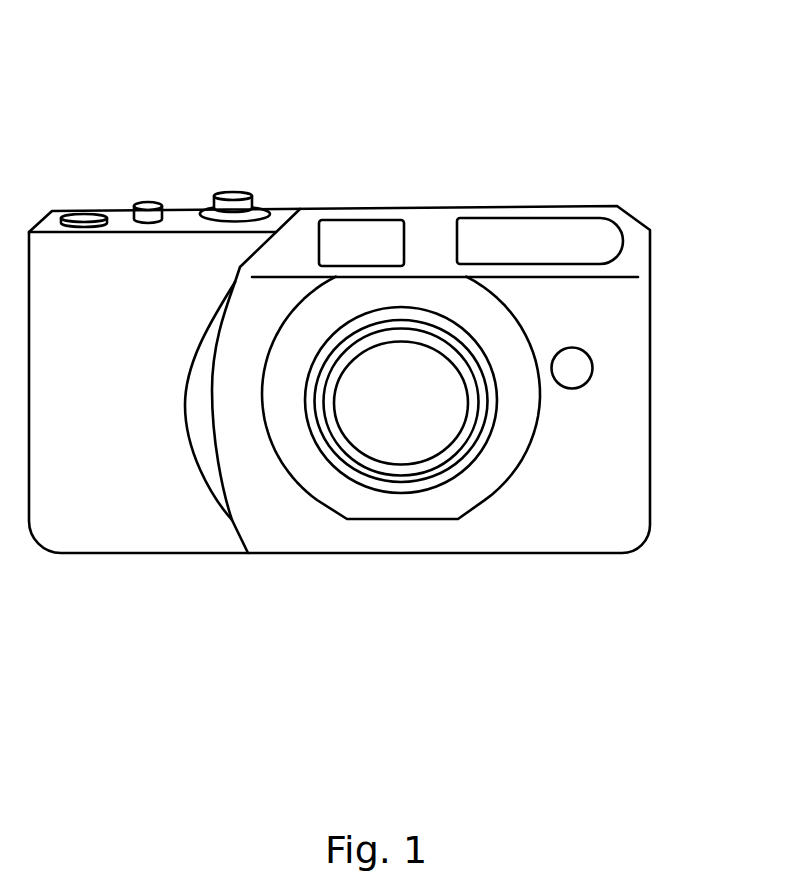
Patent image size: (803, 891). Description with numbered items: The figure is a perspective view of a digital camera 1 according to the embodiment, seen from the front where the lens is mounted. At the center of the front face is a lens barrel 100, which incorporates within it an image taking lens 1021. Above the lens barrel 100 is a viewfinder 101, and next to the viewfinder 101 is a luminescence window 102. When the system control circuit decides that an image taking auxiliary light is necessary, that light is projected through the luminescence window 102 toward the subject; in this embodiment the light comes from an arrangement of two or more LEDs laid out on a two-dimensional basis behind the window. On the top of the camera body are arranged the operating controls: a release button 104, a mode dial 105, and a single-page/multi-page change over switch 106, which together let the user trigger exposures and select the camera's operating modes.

The digital camera 1 is at (520, 96).
The lens barrel 100 is at (462, 430).
The image taking lens 1021 is at (382, 418).
The viewfinder 101 is at (362, 238).
The luminescence window 102 is at (582, 238).
The release button 104 is at (90, 213).
The mode dial 105 is at (228, 197).
The single-page/multi-page change over switch 106 is at (143, 210).